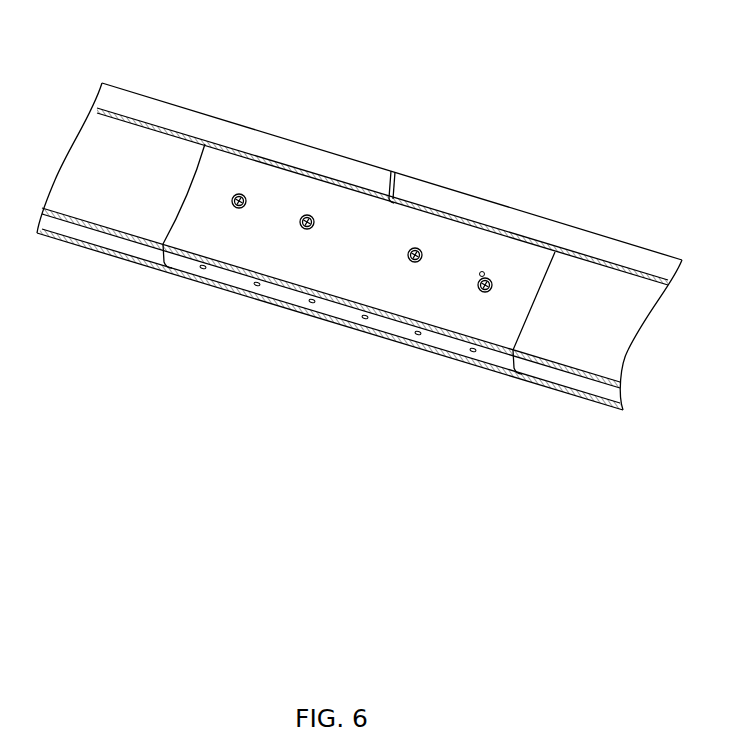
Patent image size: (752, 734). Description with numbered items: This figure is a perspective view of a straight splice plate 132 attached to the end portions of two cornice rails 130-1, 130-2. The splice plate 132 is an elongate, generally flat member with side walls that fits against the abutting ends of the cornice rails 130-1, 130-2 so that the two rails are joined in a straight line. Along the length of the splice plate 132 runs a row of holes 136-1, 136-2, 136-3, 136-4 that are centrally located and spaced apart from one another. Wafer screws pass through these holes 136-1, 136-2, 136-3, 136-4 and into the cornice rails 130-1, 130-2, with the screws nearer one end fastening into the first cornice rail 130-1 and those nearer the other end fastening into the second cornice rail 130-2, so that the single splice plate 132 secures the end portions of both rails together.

The cornice rail 130-1 is at (185, 110).
The cornice rail 130-2 is at (623, 243).
The straight splice plate 132 is at (280, 305).
The hole 136-1 is at (245, 195).
The hole 136-2 is at (312, 216).
The hole 136-3 is at (421, 250).
The hole 136-4 is at (490, 279).